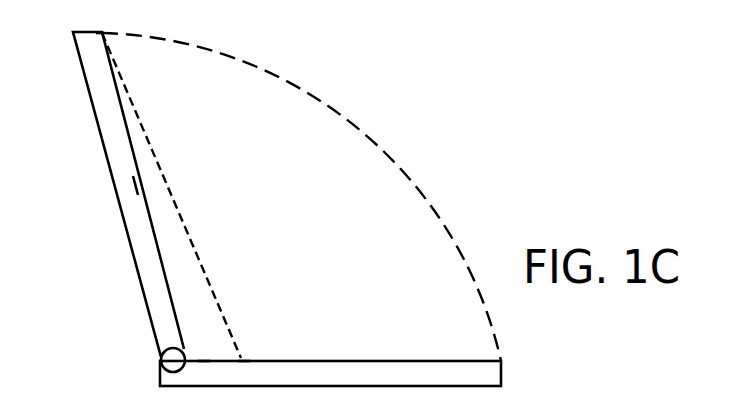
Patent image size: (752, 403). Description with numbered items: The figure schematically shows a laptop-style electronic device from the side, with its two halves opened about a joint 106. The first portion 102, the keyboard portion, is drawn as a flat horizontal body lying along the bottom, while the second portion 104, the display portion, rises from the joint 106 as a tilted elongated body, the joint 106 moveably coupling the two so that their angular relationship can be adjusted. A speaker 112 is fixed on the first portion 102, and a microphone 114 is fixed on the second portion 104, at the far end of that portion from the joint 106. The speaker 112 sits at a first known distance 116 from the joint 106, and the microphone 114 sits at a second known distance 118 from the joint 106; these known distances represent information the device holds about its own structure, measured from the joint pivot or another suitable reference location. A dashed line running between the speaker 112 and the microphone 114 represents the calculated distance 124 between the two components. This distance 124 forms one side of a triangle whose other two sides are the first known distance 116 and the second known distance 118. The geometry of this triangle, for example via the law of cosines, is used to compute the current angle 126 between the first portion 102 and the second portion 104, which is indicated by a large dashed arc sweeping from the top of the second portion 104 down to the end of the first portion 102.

The first portion 102 is at (330, 362).
The second portion 104 is at (83, 68).
The joint 106 is at (161, 360).
The speaker 112 is at (243, 361).
The microphone 114 is at (100, 33).
The first known distance 116 is at (203, 361).
The second known distance 118 is at (138, 185).
The distance 124 is at (182, 225).
The current angle 126 is at (375, 143).